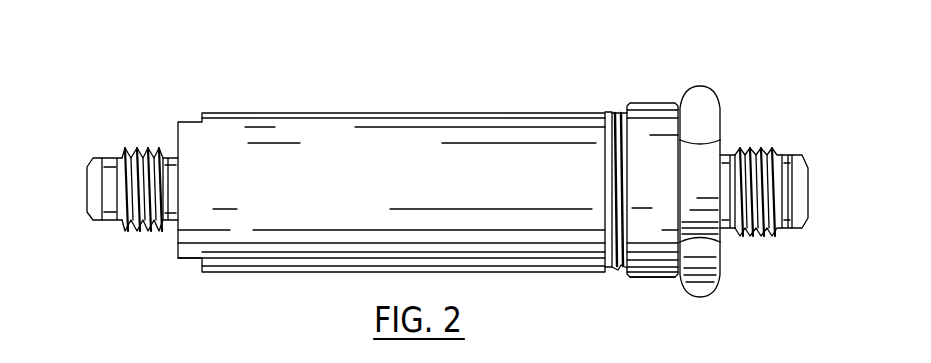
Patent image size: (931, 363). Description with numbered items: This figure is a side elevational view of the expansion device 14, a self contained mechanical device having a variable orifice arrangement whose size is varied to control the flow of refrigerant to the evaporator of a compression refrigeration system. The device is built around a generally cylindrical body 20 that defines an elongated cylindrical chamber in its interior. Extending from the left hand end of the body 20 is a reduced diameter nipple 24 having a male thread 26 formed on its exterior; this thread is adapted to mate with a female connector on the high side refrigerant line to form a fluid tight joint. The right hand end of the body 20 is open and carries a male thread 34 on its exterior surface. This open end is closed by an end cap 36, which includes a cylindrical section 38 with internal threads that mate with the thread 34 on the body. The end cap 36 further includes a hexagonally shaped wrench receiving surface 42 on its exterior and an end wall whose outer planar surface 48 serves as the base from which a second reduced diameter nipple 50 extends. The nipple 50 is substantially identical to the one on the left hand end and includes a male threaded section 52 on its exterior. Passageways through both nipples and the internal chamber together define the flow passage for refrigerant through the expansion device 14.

The expansion device 14 is at (232, 92).
The body 20 is at (399, 112).
The nipple 24 is at (100, 156).
The male thread 26 is at (140, 147).
The male thread 34 is at (618, 110).
The end cap 36 is at (653, 86).
The cylindrical section 38 is at (647, 278).
The wrench receiving surface 42 is at (704, 85).
The outer planar surface 48 is at (722, 137).
The nipple 50 is at (785, 146).
The male threaded section 52 is at (769, 238).